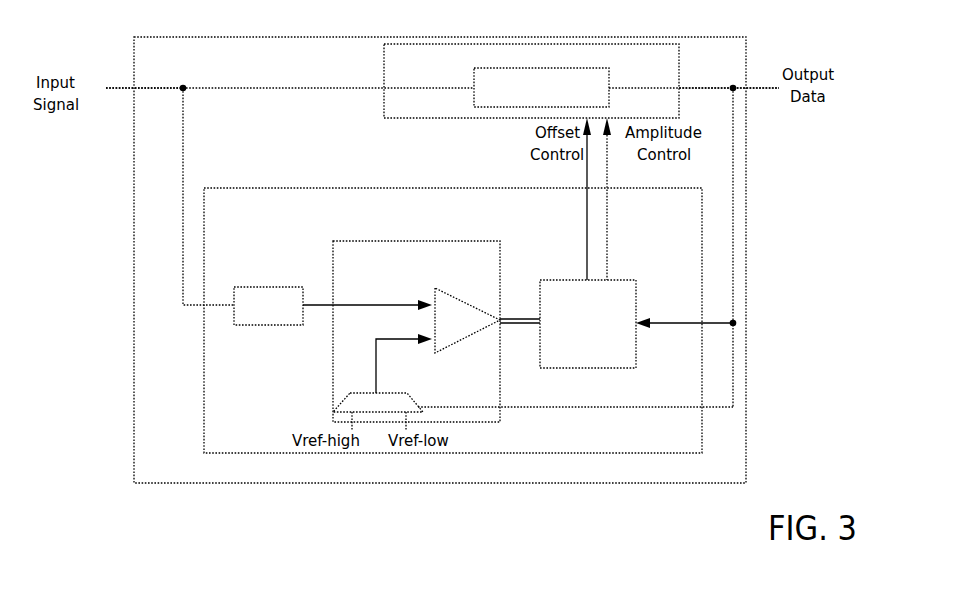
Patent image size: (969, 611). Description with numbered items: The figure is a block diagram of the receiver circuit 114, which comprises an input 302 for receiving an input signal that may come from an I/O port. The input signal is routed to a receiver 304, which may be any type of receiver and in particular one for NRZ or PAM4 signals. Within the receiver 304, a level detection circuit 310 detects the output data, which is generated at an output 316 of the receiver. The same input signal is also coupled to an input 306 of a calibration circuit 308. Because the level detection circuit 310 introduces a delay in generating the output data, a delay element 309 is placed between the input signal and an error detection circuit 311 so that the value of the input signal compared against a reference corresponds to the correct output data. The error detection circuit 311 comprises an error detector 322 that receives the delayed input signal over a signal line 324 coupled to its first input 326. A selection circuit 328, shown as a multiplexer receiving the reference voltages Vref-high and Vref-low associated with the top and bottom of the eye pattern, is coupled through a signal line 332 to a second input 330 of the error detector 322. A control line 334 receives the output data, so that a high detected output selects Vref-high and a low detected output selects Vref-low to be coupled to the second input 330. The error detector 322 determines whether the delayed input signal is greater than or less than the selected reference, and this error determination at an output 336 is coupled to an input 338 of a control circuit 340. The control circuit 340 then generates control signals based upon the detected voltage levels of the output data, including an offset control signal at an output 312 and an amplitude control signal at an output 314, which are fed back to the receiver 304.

The receiver circuit 114 is at (746, 50).
The input 302 is at (134, 87).
The receiver 304 is at (653, 43).
The input 306 is at (203, 307).
The calibration circuit 308 is at (662, 189).
The delay element 309 is at (278, 287).
The level detection circuit 310 is at (474, 76).
The error detection circuit 311 is at (430, 241).
The output 312 is at (586, 196).
The output 314 is at (607, 196).
The output 316 is at (683, 92).
The error detector 322 is at (453, 298).
The signal line 324 is at (363, 303).
The first input 326 is at (428, 300).
The selection circuit 328 is at (408, 393).
The second input 330 is at (430, 343).
The signal line 332 is at (397, 340).
The control line 334 is at (417, 404).
The output 336 is at (532, 303).
The input 338 is at (540, 325).
The control circuit 340 is at (637, 303).